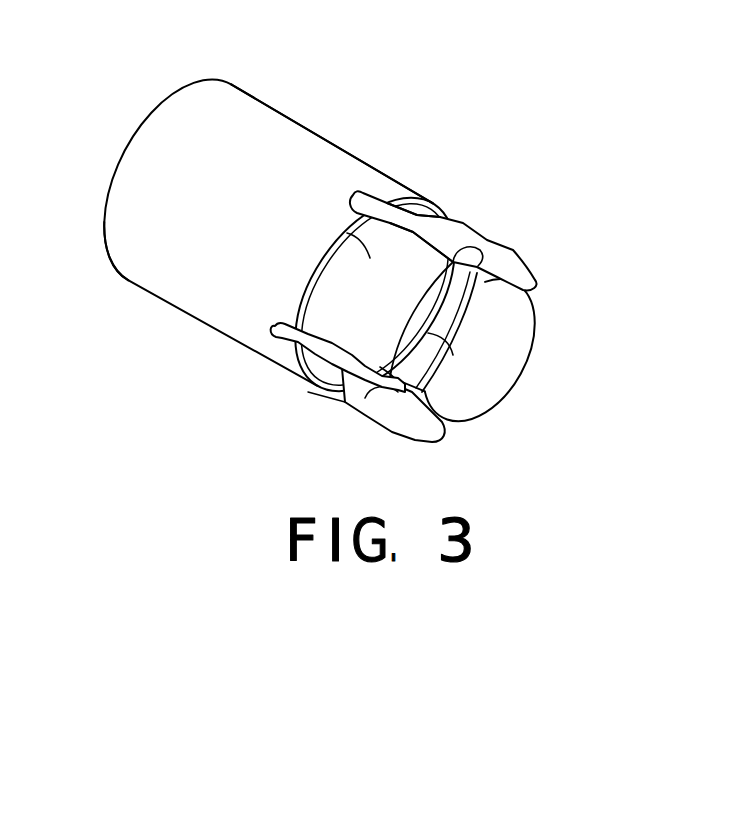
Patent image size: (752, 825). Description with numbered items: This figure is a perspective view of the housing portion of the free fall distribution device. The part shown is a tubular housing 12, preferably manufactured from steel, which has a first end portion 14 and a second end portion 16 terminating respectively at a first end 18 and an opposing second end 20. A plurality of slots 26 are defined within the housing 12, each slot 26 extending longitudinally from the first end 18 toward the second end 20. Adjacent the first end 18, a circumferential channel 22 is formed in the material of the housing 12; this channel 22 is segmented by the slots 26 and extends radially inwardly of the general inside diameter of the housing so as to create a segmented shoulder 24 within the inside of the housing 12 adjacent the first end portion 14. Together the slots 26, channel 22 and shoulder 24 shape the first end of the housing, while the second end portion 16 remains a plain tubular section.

The tubular housing 12 is at (242, 211).
The first end portion 14 is at (297, 407).
The second end portion 16 is at (110, 297).
The first end 18 is at (533, 352).
The second end 20 is at (222, 100).
The circumferential channel 22 is at (422, 202).
The segmented shoulder 24 is at (430, 360).
The slots 26 is at (530, 297).